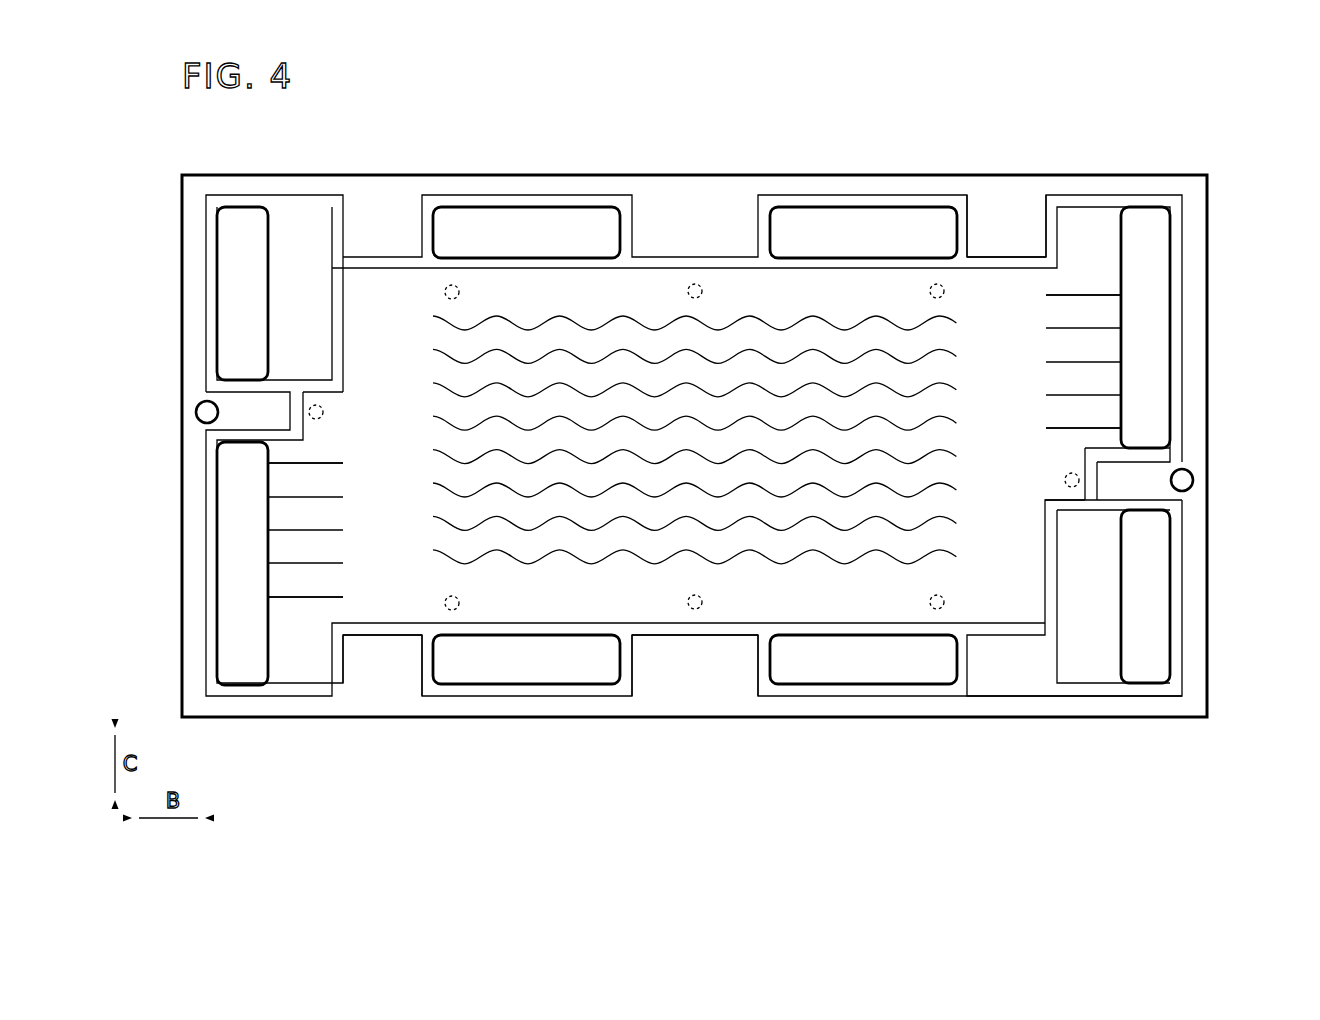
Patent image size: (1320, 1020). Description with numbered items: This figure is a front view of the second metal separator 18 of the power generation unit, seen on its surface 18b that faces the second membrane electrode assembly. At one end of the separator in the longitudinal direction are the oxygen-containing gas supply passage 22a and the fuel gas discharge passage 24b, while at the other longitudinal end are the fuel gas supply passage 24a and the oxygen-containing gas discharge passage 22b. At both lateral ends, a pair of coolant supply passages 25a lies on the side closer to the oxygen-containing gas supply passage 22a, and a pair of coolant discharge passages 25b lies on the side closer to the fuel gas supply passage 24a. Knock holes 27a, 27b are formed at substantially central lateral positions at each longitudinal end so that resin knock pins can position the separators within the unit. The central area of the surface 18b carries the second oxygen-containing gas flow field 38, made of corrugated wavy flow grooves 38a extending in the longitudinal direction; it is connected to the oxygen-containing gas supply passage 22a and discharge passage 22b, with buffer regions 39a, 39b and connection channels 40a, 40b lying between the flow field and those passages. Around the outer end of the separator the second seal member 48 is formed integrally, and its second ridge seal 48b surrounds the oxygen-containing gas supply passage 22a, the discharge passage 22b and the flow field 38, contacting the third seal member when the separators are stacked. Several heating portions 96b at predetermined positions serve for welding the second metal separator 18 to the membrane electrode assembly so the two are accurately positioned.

The second metal separator 18 is at (278, 133).
The surface of second metal separator 18b is at (1010, 688).
The oxygen-containing gas supply passage 22a is at (1138, 310).
The oxygen-containing gas discharge passage 22b is at (238, 530).
The fuel gas supply passage 24a is at (238, 295).
The fuel gas discharge passage 24b is at (1157, 593).
The coolant supply passage 25a is at (867, 228).
The coolant discharge passage 25b is at (523, 225).
The knock hole 27a is at (1196, 482).
The knock hole 27b is at (196, 412).
The second oxygen-containing gas flow field 38 is at (658, 338).
The wavy flow grooves 38a is at (705, 397).
The inlet buffer 39a is at (402, 497).
The outlet buffer 39b is at (1007, 353).
The inlet connection channels 40a is at (1083, 312).
The outlet connection channels 40b is at (307, 583).
The second seal member 48 is at (397, 171).
The second ridge seal 48b is at (703, 635).
The heating portion 96b is at (462, 292).